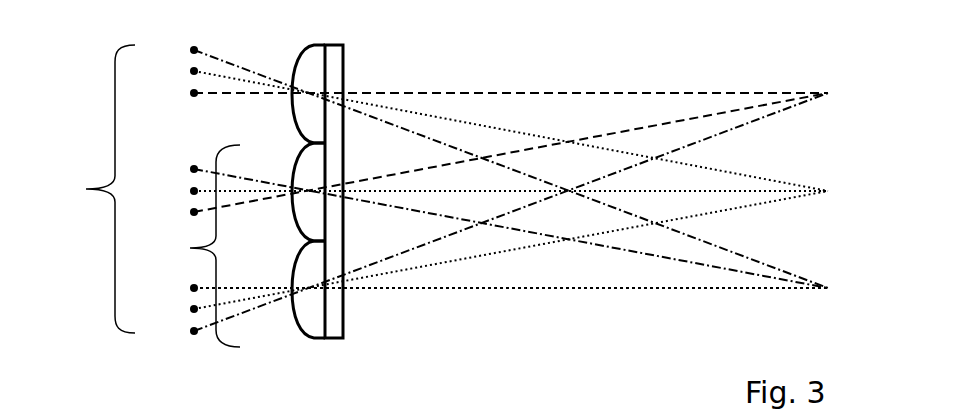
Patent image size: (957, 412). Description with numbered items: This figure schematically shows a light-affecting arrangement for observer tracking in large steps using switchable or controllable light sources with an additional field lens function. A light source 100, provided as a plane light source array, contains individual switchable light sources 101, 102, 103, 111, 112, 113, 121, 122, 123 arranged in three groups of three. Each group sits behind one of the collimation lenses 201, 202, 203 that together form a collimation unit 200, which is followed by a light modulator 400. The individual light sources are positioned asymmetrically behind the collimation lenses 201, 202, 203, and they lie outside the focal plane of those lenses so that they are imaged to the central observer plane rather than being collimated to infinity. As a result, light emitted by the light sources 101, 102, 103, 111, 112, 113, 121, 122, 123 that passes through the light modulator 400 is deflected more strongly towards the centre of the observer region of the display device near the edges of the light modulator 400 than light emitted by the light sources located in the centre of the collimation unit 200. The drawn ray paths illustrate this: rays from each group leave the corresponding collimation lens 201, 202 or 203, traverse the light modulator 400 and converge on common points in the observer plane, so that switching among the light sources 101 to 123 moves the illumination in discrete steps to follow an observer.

The light source 100 is at (89, 189).
The light source 101 is at (190, 50).
The light source 102 is at (190, 71).
The light source 103 is at (190, 93).
The light source 111 is at (190, 169).
The light source 112 is at (190, 191).
The light source 113 is at (190, 212).
The light source 121 is at (190, 288).
The light source 122 is at (190, 309).
The light source 123 is at (190, 331).
The collimation unit 200 is at (196, 246).
The collimation lens 201 is at (307, 115).
The collimation lens 202 is at (307, 220).
The collimation lens 203 is at (308, 308).
The light modulator 400 is at (335, 58).